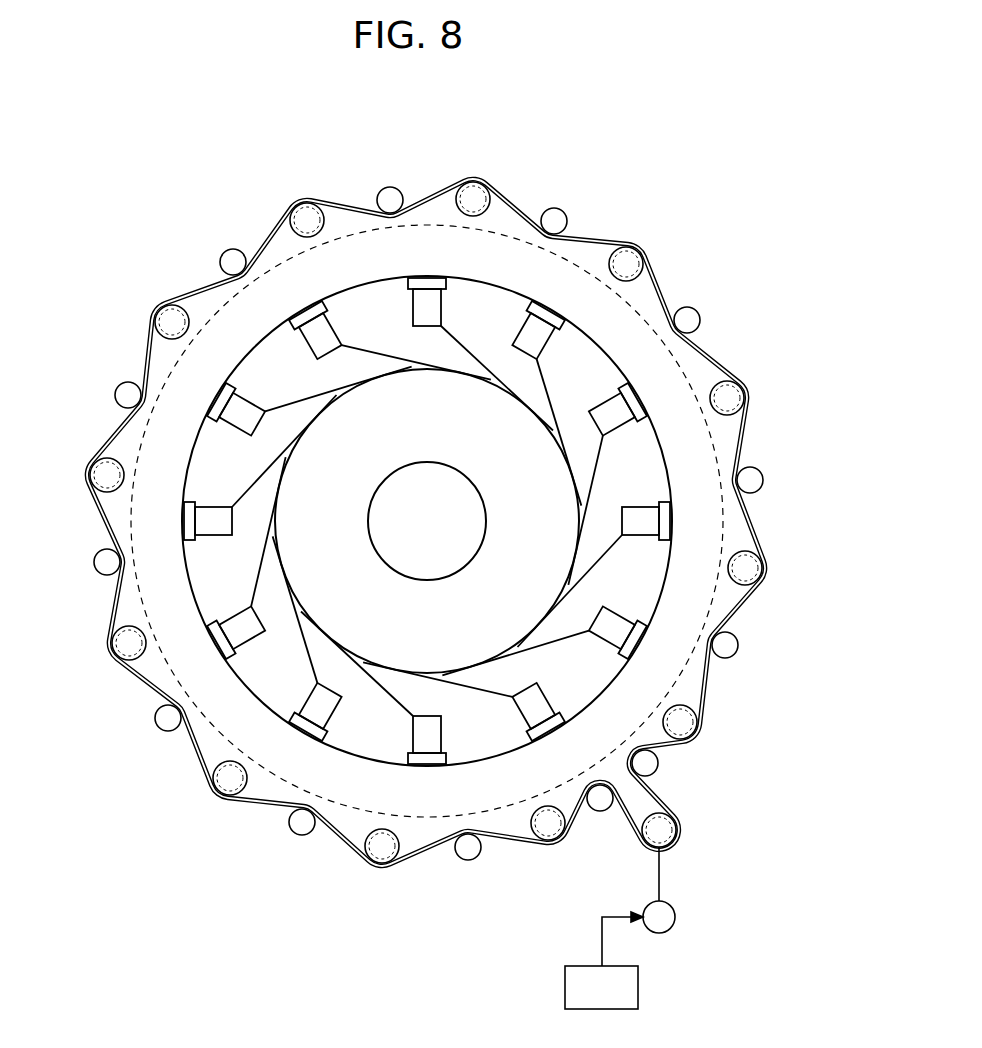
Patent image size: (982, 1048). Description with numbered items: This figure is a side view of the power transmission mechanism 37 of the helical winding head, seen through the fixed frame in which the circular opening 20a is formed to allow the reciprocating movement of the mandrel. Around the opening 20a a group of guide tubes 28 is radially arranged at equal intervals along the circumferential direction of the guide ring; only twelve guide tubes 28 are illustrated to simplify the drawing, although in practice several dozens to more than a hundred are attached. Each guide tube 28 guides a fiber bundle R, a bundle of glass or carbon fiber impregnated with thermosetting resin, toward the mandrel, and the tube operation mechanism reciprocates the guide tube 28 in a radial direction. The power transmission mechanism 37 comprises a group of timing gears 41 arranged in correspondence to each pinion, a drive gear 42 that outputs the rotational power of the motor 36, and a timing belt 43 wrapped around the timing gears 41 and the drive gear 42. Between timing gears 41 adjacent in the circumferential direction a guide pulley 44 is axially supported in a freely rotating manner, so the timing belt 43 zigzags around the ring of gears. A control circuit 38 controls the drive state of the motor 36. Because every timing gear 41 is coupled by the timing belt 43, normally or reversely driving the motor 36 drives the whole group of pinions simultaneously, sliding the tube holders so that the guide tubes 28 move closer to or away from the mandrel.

The opening 20a is at (356, 755).
The guide tube 28 is at (335, 323).
The fiber bundle R is at (480, 375).
The timing belt 43 is at (706, 677).
The timing gear 41 is at (303, 206).
The guide pulley 44 is at (228, 250).
The drive gear 42 is at (677, 830).
The motor 36 is at (676, 917).
The control circuit 38 is at (565, 997).
The power transmission mechanism 37 is at (600, 836).